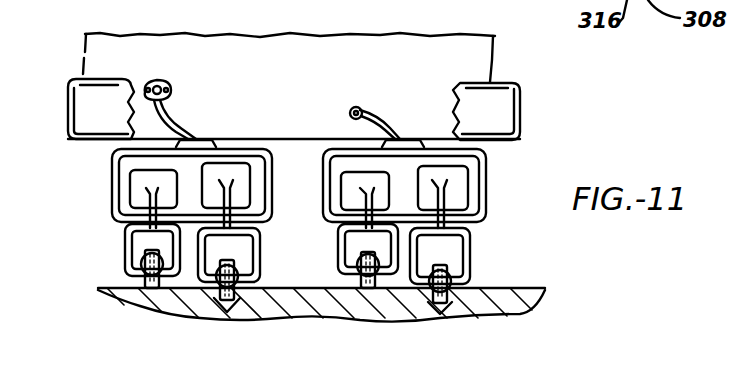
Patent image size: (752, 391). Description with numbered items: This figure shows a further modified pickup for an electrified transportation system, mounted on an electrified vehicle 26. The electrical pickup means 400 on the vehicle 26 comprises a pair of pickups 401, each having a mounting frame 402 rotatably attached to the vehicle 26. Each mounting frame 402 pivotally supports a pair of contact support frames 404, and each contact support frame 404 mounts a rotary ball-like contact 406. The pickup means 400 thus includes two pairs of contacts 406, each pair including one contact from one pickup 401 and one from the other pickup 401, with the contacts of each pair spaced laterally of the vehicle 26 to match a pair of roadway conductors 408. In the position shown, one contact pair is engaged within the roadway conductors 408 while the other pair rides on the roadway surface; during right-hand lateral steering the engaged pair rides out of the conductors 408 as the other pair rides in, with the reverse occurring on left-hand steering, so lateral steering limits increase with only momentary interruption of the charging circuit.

The electrified vehicle 26 is at (185, 35).
The electrical pickup means 400 is at (246, 147).
The pickup 401 is at (298, 162).
The mounting frame 402 is at (112, 176).
The contact support frame 404 is at (125, 248).
The rotary ball-like contact 406 is at (140, 278).
The roadway conductor 408 is at (230, 306).